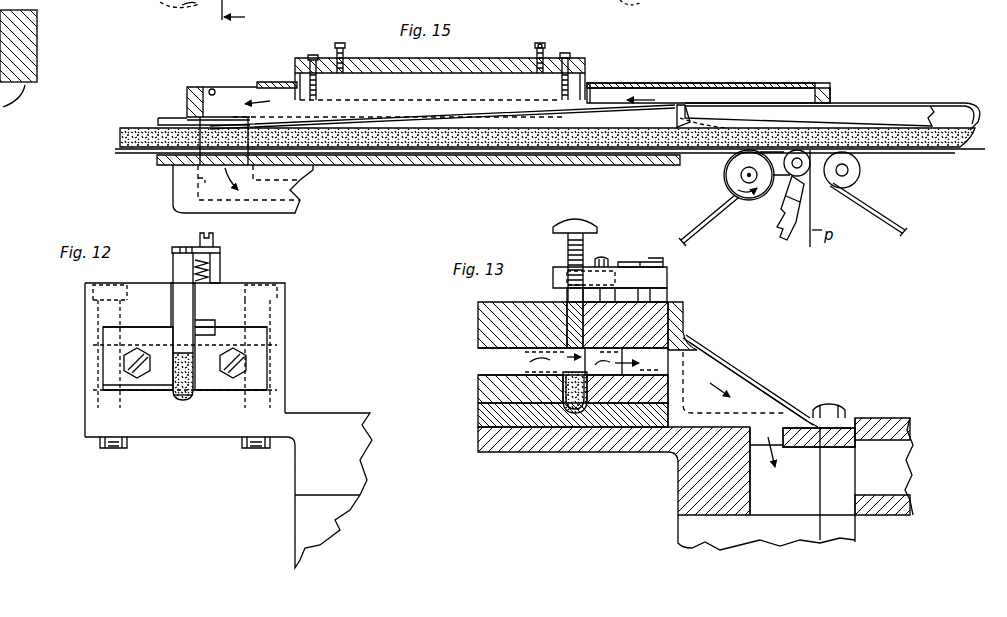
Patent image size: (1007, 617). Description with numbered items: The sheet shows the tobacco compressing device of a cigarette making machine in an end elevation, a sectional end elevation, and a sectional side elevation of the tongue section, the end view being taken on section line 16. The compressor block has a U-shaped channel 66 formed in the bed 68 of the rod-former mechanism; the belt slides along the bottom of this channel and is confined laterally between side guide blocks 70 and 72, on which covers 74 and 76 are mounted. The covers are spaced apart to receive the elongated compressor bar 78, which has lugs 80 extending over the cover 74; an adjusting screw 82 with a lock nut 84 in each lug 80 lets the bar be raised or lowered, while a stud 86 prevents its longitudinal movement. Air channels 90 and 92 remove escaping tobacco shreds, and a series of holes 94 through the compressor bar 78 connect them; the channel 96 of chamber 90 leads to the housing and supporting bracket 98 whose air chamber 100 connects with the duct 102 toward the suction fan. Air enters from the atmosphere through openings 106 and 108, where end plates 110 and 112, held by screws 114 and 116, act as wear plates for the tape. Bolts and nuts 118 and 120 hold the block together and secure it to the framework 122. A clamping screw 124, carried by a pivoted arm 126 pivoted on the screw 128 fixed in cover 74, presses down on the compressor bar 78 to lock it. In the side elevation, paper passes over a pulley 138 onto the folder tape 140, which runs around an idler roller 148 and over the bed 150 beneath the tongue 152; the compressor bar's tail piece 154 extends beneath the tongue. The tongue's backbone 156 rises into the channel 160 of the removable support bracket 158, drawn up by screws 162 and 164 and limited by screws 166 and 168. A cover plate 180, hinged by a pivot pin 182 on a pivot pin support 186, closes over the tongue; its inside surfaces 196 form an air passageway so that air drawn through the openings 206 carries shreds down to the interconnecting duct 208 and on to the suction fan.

In FIG. 15, the section line 16 is at (245, 15).
In FIG. 12, the U-shaped channel 66 is at (178, 402).
In FIG. 12, the bed 68 is at (180, 401).
In FIG. 12, the side guide block 70 is at (200, 372).
In FIG. 12, the side guide block 72 is at (168, 378).
In FIG. 12, the cover 74 is at (232, 296).
In FIG. 12, the cover 76 is at (133, 290).
In FIG. 15, the compressor bar 78 is at (892, 122).
In FIG. 12, the compressor bar 78 is at (178, 290).
In FIG. 12, the lug 80 is at (206, 240).
In FIG. 12, the adjusting screw 82 is at (220, 250).
In FIG. 12, the lock nut 84 is at (222, 262).
In FIG. 12, the stud 86 is at (220, 268).
In FIG. 12, the air channel 90 is at (219, 333).
In FIG. 13, the air channel 90 is at (640, 348).
In FIG. 12, the air channel 92 is at (133, 336).
In FIG. 13, the air channel 92 is at (560, 350).
In FIG. 13, the holes 94 is at (530, 368).
In FIG. 13, the air channel 96 is at (697, 345).
In FIG. 13, the housing and supporting bracket 98 is at (740, 367).
In FIG. 13, the air chamber 100 is at (753, 395).
In FIG. 13, the duct 102 is at (752, 475).
In FIG. 12, the opening 106 is at (163, 328).
In FIG. 12, the opening 108 is at (203, 322).
In FIG. 12, the end plate 110 is at (257, 376).
In FIG. 12, the end plate 112 is at (130, 392).
In FIG. 12, the screw 114 is at (245, 358).
In FIG. 12, the screw 116 is at (125, 362).
In FIG. 12, the bolt and nut 118 is at (248, 452).
In FIG. 12, the bolt and nut 120 is at (113, 452).
In FIG. 12, the framework 122 is at (297, 435).
In FIG. 13, the clamping screw 124 is at (573, 218).
In FIG. 13, the pivoted arm 126 is at (656, 285).
In FIG. 13, the screw 128 is at (620, 262).
In FIG. 15, the pulley 138 is at (795, 170).
In FIG. 15, the folder tape 140 is at (705, 232).
In FIG. 15, the idler roller 148 is at (728, 172).
In FIG. 15, the bed 150 is at (386, 167).
In FIG. 15, the tongue 152 is at (663, 107).
In FIG. 15, the tail piece 154 is at (597, 127).
In FIG. 15, the backbone 156 is at (292, 78).
In FIG. 15, the support bracket 158 is at (352, 58).
In FIG. 15, the channel 160 is at (428, 77).
In FIG. 15, the screw 162 is at (548, 33).
In FIG. 15, the screw 164 is at (311, 56).
In FIG. 15, the screw 166 is at (340, 44).
In FIG. 15, the screw 168 is at (535, 47).
In FIG. 15, the cover plate 180 is at (196, 85).
In FIG. 15, the pivot pin 182 is at (640, 3).
In FIG. 15, the pivot pin support 186 is at (182, 5).
In FIG. 15, the inside surfaces 196 is at (217, 88).
In FIG. 15, the opening 206 is at (823, 107).
In FIG. 15, the interconnecting duct 208 is at (195, 183).